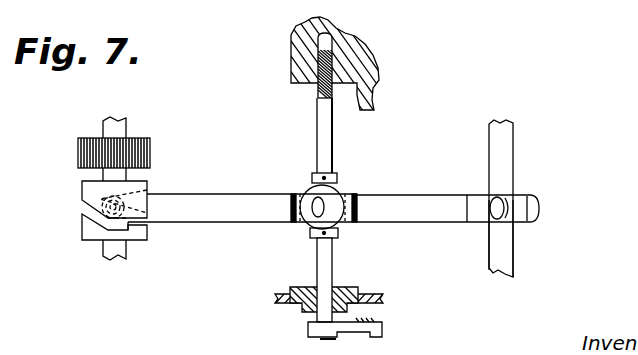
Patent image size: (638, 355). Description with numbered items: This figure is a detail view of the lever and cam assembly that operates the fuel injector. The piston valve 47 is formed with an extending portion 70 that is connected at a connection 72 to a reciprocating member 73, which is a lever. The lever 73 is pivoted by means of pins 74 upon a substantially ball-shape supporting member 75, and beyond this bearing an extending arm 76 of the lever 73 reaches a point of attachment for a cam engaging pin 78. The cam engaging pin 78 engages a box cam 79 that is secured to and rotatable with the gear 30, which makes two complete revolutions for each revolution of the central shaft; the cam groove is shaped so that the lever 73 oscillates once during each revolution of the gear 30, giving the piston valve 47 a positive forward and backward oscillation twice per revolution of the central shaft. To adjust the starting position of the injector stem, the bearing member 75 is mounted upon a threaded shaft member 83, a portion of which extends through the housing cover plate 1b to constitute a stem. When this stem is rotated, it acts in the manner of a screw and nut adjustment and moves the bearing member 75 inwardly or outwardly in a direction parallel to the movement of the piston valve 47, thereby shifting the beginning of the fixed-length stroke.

The housing cover plate 1b is at (367, 56).
The gear 30 is at (78, 150).
The piston valve 47 is at (513, 141).
The extending portion 70 is at (505, 252).
The connection 72 is at (499, 198).
The reciprocating member 73 is at (415, 200).
The pins 74 is at (314, 204).
The ball-shape supporting member 75 is at (340, 193).
The extending arm 76 is at (225, 210).
The cam engaging pin 78 is at (147, 190).
The box cam 79 is at (82, 190).
The threaded shaft member 83 is at (333, 259).